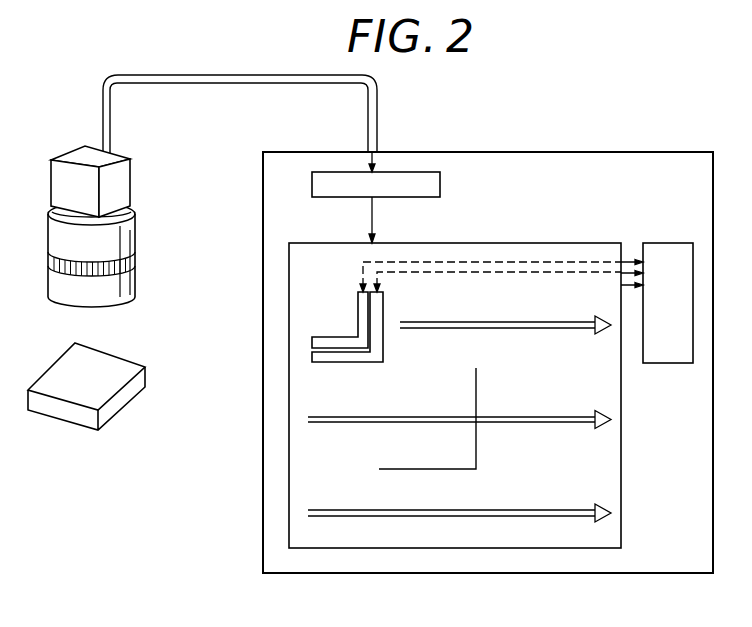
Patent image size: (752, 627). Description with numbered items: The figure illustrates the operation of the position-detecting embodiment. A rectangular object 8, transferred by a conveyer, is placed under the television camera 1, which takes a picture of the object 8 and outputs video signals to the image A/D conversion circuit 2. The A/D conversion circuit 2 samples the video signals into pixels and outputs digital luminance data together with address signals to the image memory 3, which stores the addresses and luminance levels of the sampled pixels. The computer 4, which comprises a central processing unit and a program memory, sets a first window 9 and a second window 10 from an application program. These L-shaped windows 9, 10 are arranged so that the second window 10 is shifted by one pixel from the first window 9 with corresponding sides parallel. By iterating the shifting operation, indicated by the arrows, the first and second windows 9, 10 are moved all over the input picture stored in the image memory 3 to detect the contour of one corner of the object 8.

The television camera 1 is at (126, 172).
The image A/D conversion circuit 2 is at (441, 187).
The image memory 3 is at (590, 247).
The computer 4 is at (677, 250).
The object 8 is at (123, 368).
The first window 9 is at (358, 302).
The second window 10 is at (383, 310).